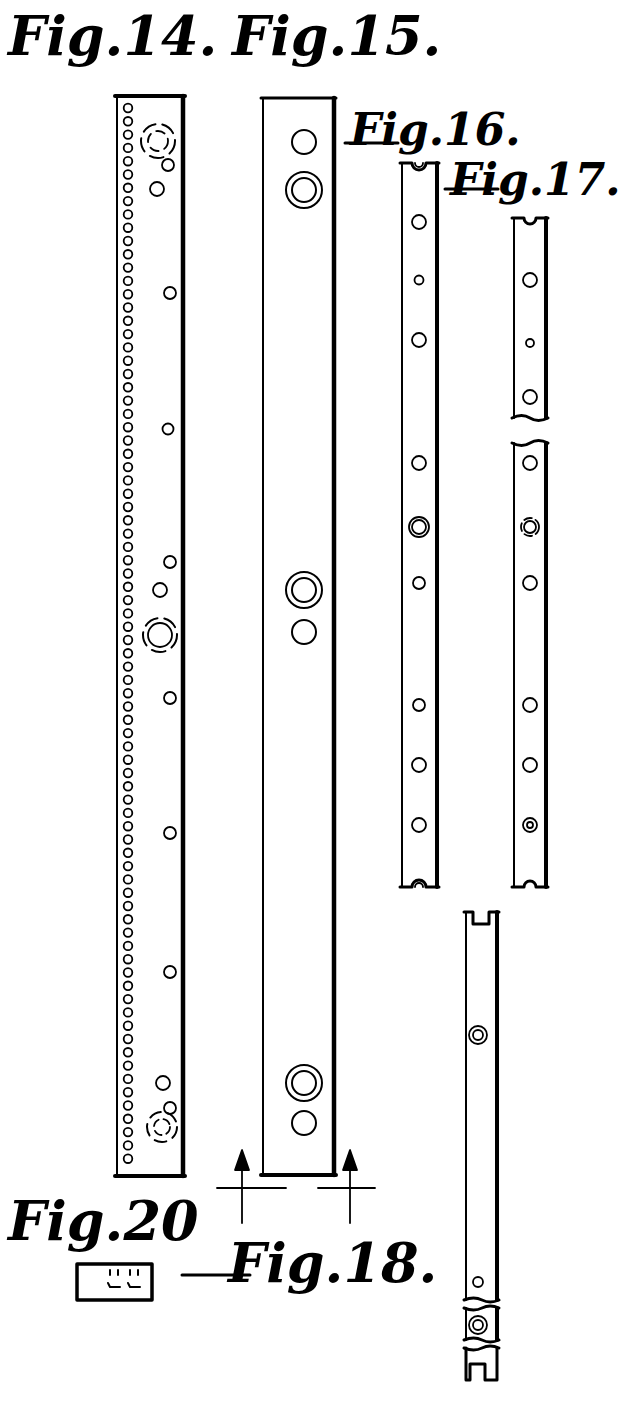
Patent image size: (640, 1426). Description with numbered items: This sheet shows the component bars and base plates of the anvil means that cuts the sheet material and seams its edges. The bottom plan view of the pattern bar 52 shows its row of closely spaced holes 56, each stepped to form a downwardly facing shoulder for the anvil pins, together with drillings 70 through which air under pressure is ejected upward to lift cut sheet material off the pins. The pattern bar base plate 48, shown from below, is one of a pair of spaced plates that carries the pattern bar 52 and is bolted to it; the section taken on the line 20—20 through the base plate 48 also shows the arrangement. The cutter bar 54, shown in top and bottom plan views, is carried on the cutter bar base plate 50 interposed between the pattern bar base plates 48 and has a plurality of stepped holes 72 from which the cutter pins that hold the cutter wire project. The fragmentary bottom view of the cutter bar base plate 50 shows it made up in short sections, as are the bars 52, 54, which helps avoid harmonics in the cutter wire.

In FIG. 15, the section line 20— 20 is at (306, 1186).
In FIG. 15, the pattern bar base plate 48 is at (336, 983).
In FIG. 20, the pattern bar base plate 48 is at (152, 1284).
In FIG. 18, the cutter bar base plate 50 is at (466, 1003).
In FIG. 14, the pattern bar 52 is at (185, 917).
In FIG. 16, the cutter bar 54 is at (439, 668).
In FIG. 17, the cutter bar 54 is at (558, 667).
In FIG. 14, the holes 56 is at (124, 607).
In FIG. 14, the drillings 70 is at (174, 429).
In FIG. 16, the stepped holes 72 is at (425, 584).